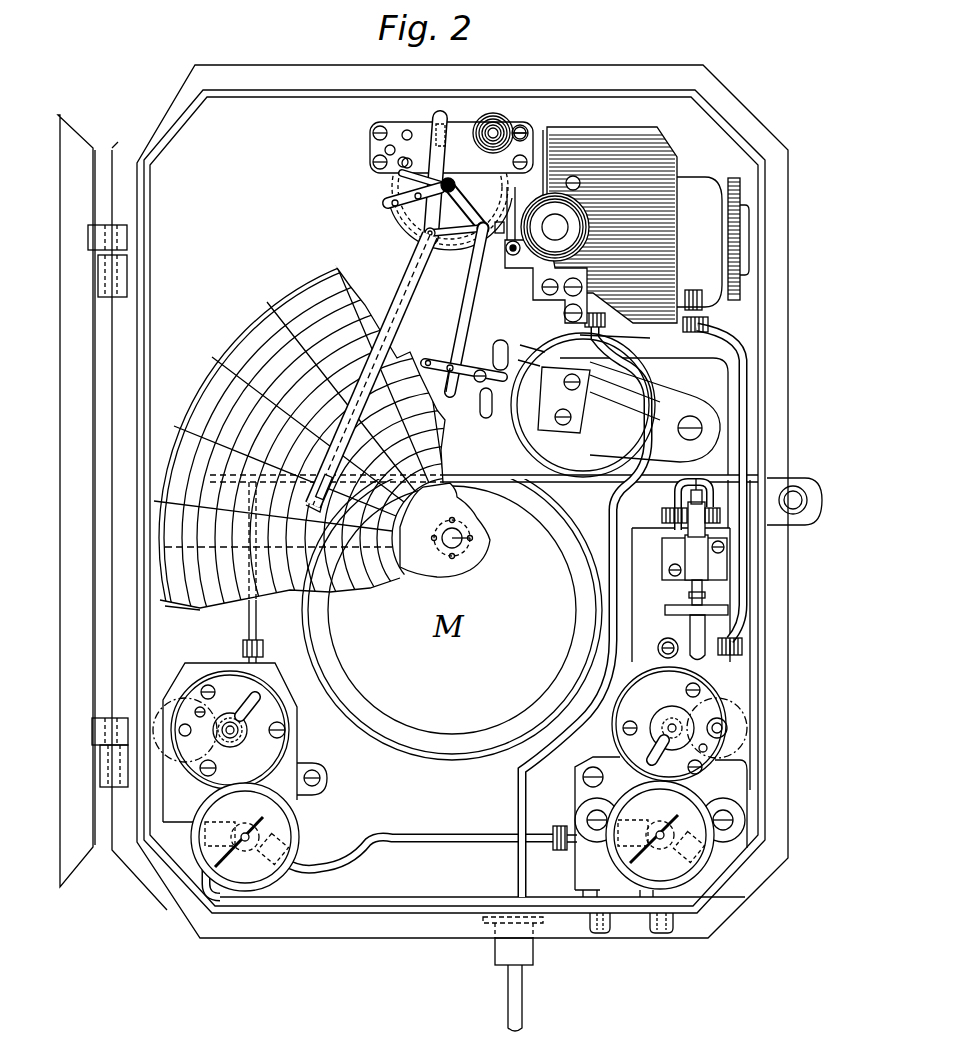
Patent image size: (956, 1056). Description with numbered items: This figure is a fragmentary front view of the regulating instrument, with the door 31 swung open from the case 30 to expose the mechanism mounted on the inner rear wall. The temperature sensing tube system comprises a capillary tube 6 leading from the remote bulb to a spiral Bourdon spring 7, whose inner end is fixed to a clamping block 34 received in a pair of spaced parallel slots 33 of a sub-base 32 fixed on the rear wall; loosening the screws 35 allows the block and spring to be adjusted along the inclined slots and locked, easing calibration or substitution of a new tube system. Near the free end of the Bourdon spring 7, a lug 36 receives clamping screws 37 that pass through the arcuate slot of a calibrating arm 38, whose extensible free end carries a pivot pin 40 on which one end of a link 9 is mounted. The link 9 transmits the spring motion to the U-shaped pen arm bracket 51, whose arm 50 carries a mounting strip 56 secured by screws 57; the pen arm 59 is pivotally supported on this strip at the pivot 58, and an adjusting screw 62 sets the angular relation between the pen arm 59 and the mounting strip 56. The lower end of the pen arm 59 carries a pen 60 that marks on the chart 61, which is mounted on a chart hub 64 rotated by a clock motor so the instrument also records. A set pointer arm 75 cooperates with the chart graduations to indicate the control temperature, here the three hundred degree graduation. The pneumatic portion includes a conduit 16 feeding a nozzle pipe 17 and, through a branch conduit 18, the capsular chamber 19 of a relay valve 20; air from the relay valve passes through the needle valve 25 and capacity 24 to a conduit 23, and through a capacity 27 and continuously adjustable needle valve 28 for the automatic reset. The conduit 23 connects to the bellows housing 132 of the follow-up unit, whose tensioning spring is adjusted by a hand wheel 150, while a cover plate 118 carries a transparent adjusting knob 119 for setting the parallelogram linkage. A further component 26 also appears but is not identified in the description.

The capillary tube 6 is at (508, 793).
The spiral Bourdon spring 7 is at (652, 384).
The link 9 is at (470, 310).
The conduit 16 is at (748, 410).
The nozzle pipe 17 is at (486, 238).
The branch conduit 18 is at (690, 642).
The capsular chamber 19 is at (672, 608).
The relay valve 20 is at (690, 560).
The conduit 23 is at (258, 618).
The capacity 24 is at (298, 757).
The needle valve 25 is at (231, 720).
The gauge 26 is at (386, 838).
The capacity 27 is at (604, 756).
The needle valve 28 is at (672, 718).
The case 30 is at (750, 126).
The door 31 is at (80, 134).
The sub-base 32 is at (690, 404).
The slots 33 is at (690, 440).
The clamping block 34 is at (564, 400).
The screws 35 is at (581, 409).
The lug 36 is at (486, 418).
The clamping screws 37 is at (484, 368).
The calibrating arm 38 is at (460, 385).
The pivot pin 40 is at (440, 364).
The arm 50 is at (450, 189).
The pen arm bracket 51 is at (432, 120).
The mounting strip 56 is at (398, 170).
The screws 57 is at (450, 140).
The pivot 58 is at (400, 192).
The pen arm 59 is at (408, 308).
The pen 60 is at (445, 530).
The chart 61 is at (190, 608).
The adjusting screw 62 is at (455, 240).
The chart hub 64 is at (468, 538).
The set pointer arm 75 is at (392, 302).
The cover plate 118 is at (670, 318).
The transparent adjusting knob 119 is at (550, 262).
The bellows housing 132 is at (693, 188).
The hand wheel 150 is at (740, 196).